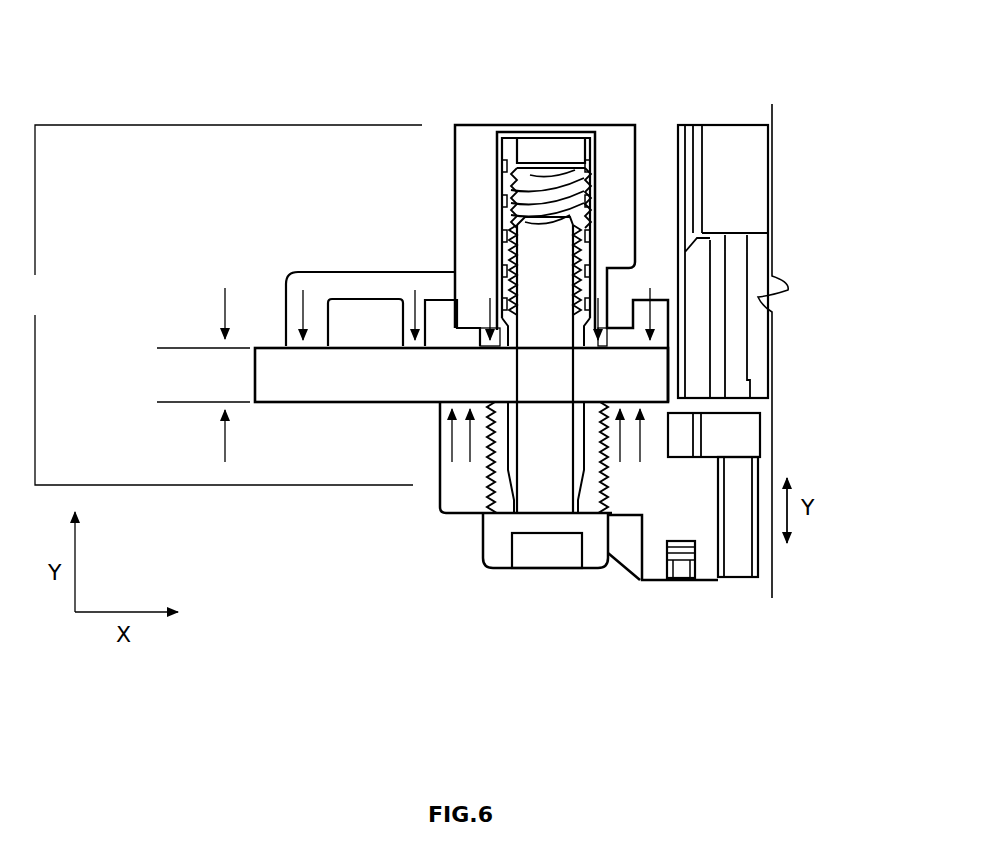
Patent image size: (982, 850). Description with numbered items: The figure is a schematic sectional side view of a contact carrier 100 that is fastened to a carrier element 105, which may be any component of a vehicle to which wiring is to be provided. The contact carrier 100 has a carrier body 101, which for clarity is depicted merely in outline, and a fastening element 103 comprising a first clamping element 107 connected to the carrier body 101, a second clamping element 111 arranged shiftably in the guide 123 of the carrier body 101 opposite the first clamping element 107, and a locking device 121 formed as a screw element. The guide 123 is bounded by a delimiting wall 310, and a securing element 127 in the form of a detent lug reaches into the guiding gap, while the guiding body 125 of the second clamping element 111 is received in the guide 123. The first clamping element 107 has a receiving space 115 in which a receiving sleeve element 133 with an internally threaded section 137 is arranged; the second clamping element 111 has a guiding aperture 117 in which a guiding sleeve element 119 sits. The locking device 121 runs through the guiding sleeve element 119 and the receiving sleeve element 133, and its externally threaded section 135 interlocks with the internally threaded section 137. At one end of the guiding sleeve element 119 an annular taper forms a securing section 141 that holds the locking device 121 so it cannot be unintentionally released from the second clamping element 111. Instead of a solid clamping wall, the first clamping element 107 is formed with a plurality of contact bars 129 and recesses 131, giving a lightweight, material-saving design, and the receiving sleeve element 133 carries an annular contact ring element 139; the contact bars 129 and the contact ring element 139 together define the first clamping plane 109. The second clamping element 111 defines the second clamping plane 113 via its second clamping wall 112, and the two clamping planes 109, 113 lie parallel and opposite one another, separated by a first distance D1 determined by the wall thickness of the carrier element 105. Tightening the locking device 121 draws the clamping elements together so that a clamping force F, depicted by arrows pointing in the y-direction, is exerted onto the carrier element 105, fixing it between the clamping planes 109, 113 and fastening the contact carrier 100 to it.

The contact carrier 100 is at (168, 28).
The carrier body 101 is at (765, 282).
The fastening element 103 is at (216, 305).
The carrier element 105 is at (312, 405).
The first clamping element 107 is at (455, 128).
The first clamping plane 109 is at (178, 346).
The second clamping element 111 is at (446, 513).
The second clamping wall 112 is at (446, 405).
The second clamping plane 113 is at (180, 404).
The receiving space 115 is at (500, 158).
The guiding aperture 117 is at (482, 492).
The guiding sleeve element 119 is at (600, 512).
The locking device 121 is at (590, 515).
The guide 123 is at (686, 440).
The guiding body 125 is at (726, 588).
The securing element 127 is at (690, 562).
The contact bars 129 is at (314, 306).
The recesses 131 is at (357, 310).
The receiving sleeve element 133 is at (545, 145).
The externally threaded section 135 is at (598, 300).
The internally threaded section 137 is at (575, 180).
The contact ring element 139 is at (490, 330).
The securing section 141 is at (573, 500).
The delimiting wall 310 is at (758, 412).
The first distance D1 is at (185, 376).
The clamping force F is at (303, 318).